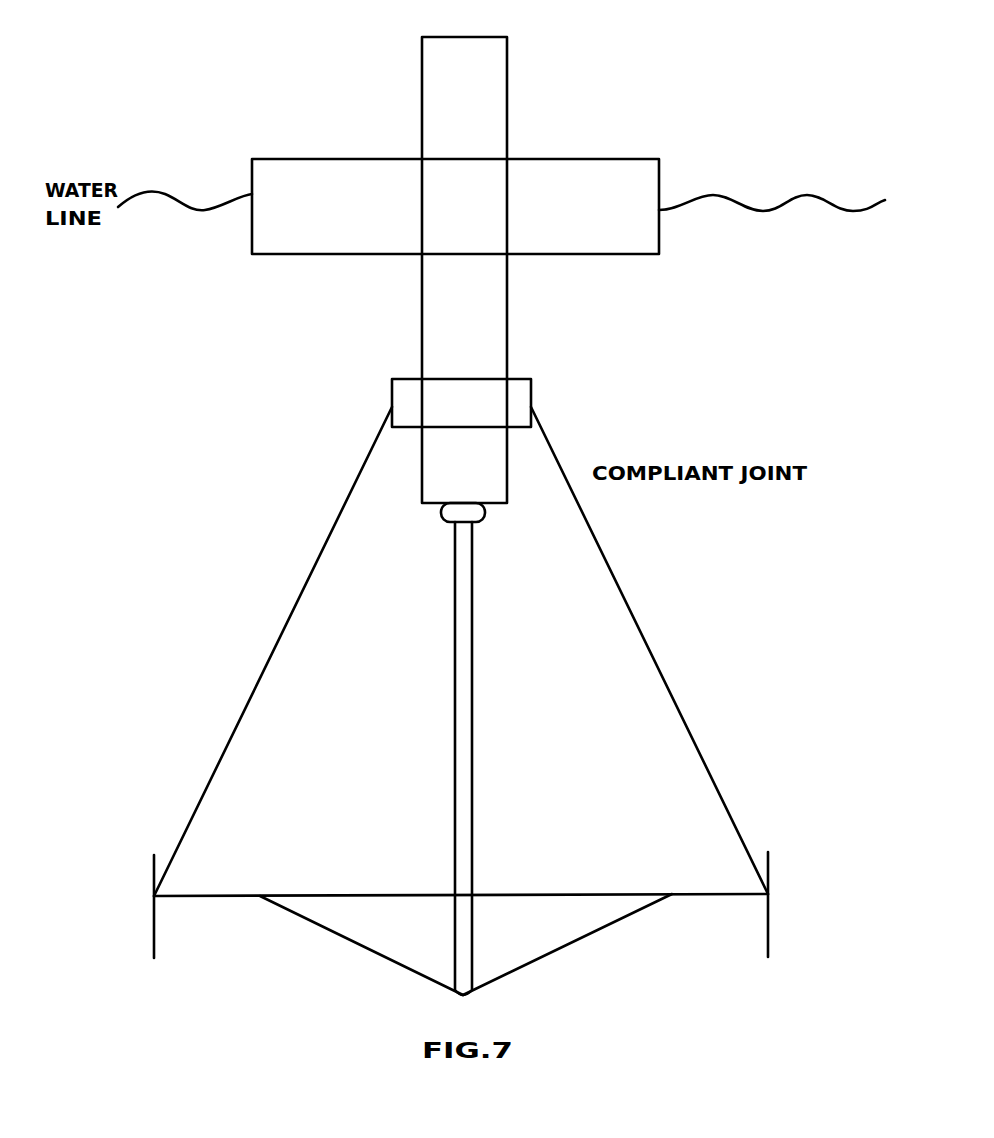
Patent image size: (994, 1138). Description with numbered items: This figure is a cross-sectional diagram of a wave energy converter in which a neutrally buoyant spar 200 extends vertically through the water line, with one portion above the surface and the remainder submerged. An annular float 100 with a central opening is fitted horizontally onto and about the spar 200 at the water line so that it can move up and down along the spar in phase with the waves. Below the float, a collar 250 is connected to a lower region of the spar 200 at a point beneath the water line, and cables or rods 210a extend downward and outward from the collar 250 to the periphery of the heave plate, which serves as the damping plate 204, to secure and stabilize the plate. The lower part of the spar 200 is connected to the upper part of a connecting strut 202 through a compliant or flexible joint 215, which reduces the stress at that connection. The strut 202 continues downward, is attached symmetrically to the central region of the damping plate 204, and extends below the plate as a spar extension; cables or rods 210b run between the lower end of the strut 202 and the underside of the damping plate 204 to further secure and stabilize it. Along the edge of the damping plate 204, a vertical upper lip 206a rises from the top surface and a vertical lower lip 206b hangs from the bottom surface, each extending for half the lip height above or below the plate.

The spar 200 is at (493, 53).
The annular float 100 is at (659, 170).
The collar 250 is at (517, 378).
The compliant/flexible joint 215 is at (487, 513).
The connecting strut 202 is at (472, 684).
The cables/rods 210a is at (242, 712).
The cables/rods 210b is at (404, 967).
The damping plate 204 is at (242, 896).
The upper lip 206a is at (768, 857).
The lower lip 206b is at (768, 955).